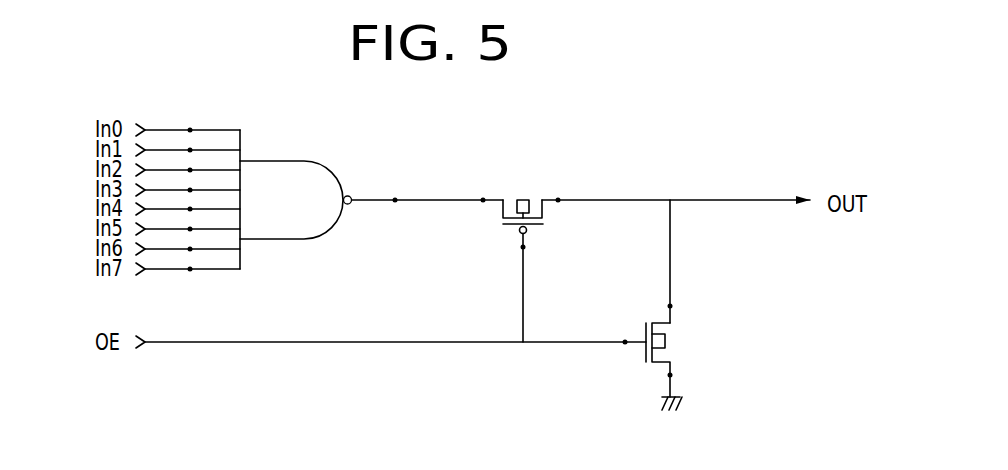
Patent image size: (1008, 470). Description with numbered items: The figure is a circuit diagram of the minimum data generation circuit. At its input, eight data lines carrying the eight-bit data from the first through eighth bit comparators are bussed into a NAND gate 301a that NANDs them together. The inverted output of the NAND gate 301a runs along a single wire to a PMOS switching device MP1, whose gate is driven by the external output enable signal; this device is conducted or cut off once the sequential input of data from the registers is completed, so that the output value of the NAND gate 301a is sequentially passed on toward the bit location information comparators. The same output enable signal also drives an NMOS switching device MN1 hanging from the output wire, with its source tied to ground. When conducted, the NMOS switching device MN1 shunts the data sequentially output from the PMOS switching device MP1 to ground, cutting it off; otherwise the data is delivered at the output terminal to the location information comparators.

The NAND gate 301a is at (296, 180).
The PMOS switching device MP1 is at (550, 271).
The NMOS switching device MN1 is at (687, 366).